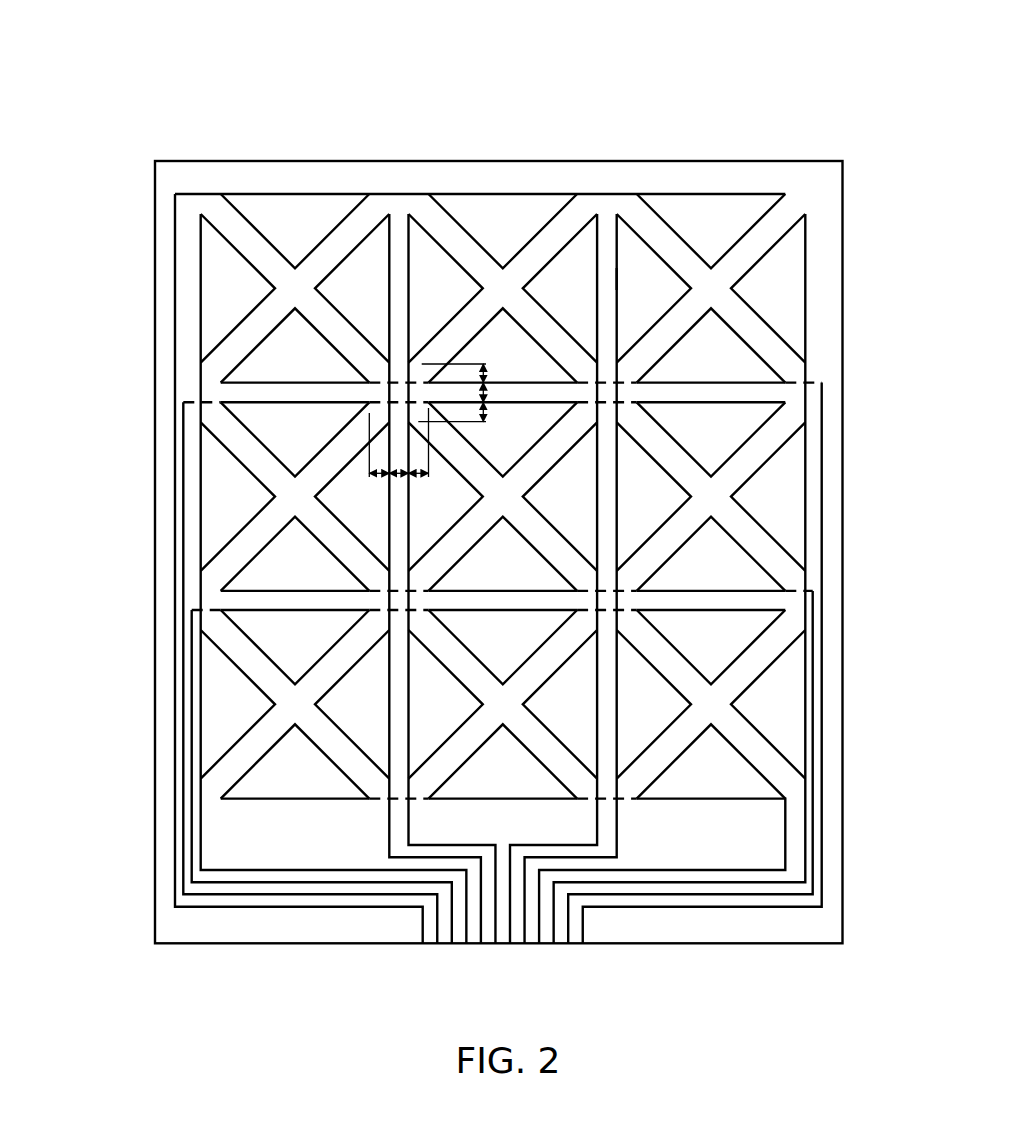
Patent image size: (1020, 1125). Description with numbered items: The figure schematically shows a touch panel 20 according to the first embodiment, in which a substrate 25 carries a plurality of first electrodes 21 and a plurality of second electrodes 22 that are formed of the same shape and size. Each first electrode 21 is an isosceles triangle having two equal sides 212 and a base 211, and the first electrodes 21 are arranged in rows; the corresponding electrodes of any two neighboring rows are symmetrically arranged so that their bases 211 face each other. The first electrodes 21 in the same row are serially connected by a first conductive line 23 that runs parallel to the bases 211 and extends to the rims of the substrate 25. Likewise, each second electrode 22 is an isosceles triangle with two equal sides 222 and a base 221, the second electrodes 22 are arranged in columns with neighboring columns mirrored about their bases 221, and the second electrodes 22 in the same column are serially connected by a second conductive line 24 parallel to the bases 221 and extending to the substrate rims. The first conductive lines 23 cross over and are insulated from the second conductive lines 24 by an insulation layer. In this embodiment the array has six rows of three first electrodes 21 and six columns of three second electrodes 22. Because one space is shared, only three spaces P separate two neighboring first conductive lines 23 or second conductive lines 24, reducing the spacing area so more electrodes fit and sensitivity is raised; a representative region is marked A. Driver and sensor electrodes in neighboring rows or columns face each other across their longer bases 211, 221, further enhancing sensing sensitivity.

The touch panel 20 is at (487, 35).
The first electrode 21 is at (426, 496).
The base 211 is at (267, 380).
The equal sides 212 is at (272, 343).
The second electrode 22 is at (503, 430).
The base 221 is at (386, 258).
The equal sides 222 is at (325, 266).
The first conductive line 23 is at (378, 380).
The second conductive line 24 is at (388, 362).
The substrate 25 is at (791, 161).
The region A is at (620, 278).
The space P is at (436, 430).